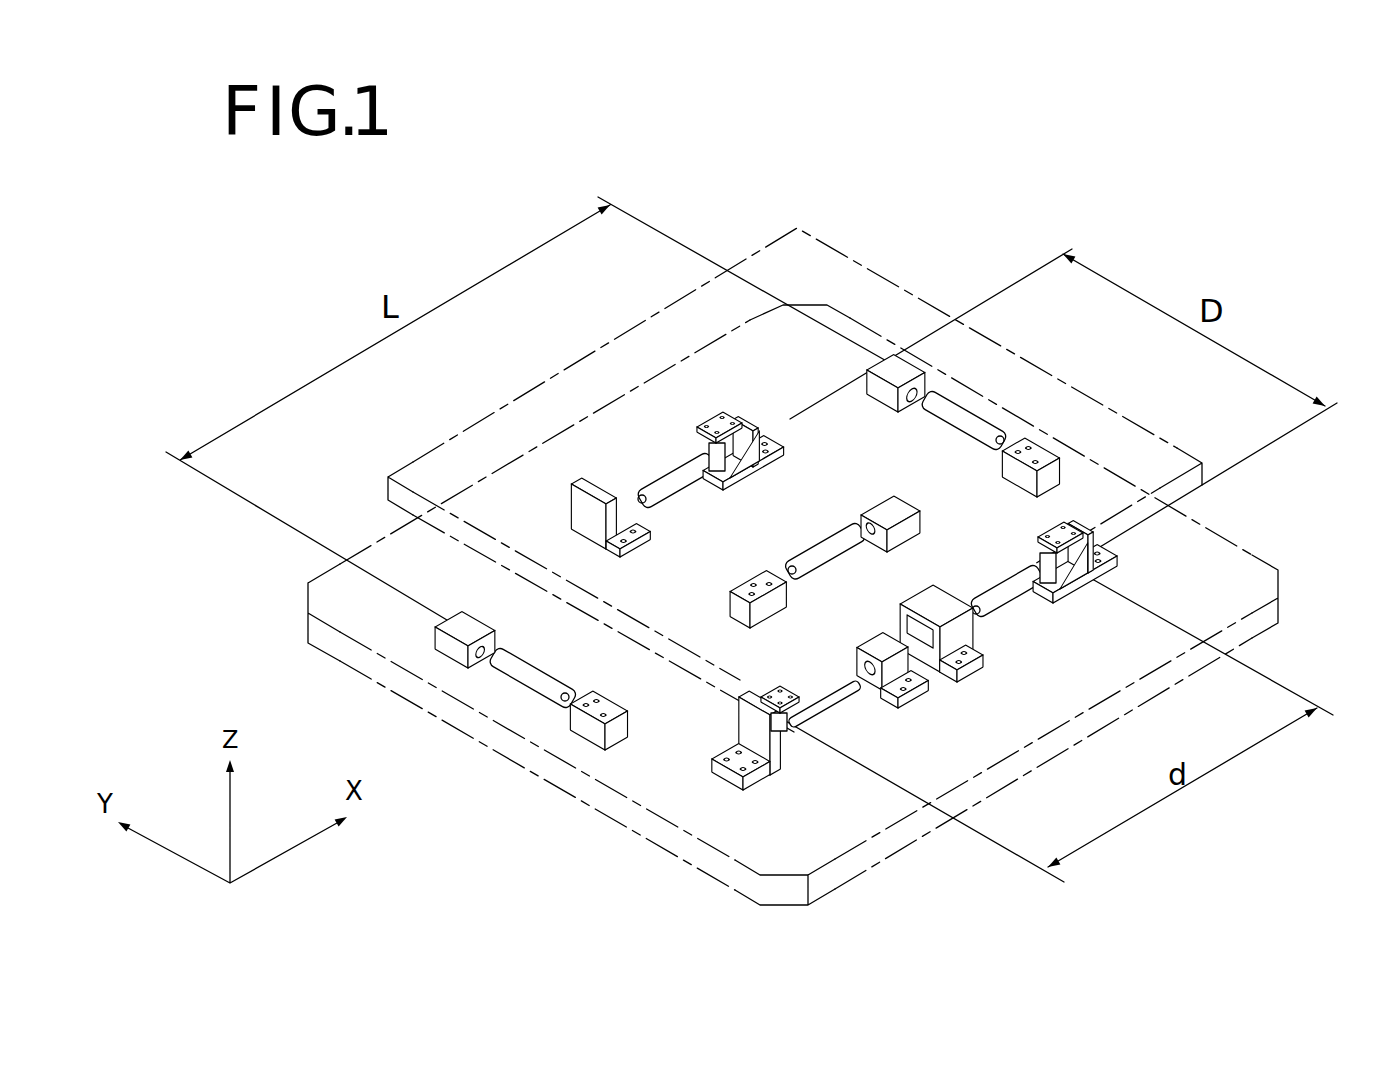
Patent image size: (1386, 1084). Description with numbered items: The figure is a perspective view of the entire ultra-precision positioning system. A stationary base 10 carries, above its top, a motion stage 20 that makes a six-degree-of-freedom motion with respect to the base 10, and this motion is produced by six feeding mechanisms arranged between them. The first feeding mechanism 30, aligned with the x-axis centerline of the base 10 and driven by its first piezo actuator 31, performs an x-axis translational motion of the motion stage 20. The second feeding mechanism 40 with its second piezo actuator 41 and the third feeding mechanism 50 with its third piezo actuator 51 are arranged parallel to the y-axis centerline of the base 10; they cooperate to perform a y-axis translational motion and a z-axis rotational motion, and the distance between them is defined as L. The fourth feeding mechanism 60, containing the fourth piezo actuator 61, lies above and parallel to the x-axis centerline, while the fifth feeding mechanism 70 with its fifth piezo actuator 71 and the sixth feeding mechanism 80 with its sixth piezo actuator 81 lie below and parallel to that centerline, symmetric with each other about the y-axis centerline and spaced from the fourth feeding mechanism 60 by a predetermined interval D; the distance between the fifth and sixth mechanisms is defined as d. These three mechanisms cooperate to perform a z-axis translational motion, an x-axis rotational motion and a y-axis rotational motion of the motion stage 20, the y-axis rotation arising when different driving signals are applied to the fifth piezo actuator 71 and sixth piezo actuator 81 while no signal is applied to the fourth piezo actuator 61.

The stationary base 10 is at (627, 830).
The motion stage 20 is at (873, 266).
The first feeding mechanism 30 is at (812, 548).
The first piezo actuator 31 is at (840, 560).
The second feeding mechanism 40 is at (512, 690).
The second piezo actuator 41 is at (547, 696).
The third feeding mechanism 50 is at (968, 400).
The third piezo actuator 51 is at (988, 428).
The fourth feeding mechanism 60 is at (685, 450).
The fourth piezo actuator 61 is at (662, 478).
The fifth feeding mechanism 70 is at (847, 703).
The fifth piezo actuator 71 is at (825, 705).
The sixth feeding mechanism 80 is at (1030, 606).
The sixth piezo actuator 81 is at (1005, 607).